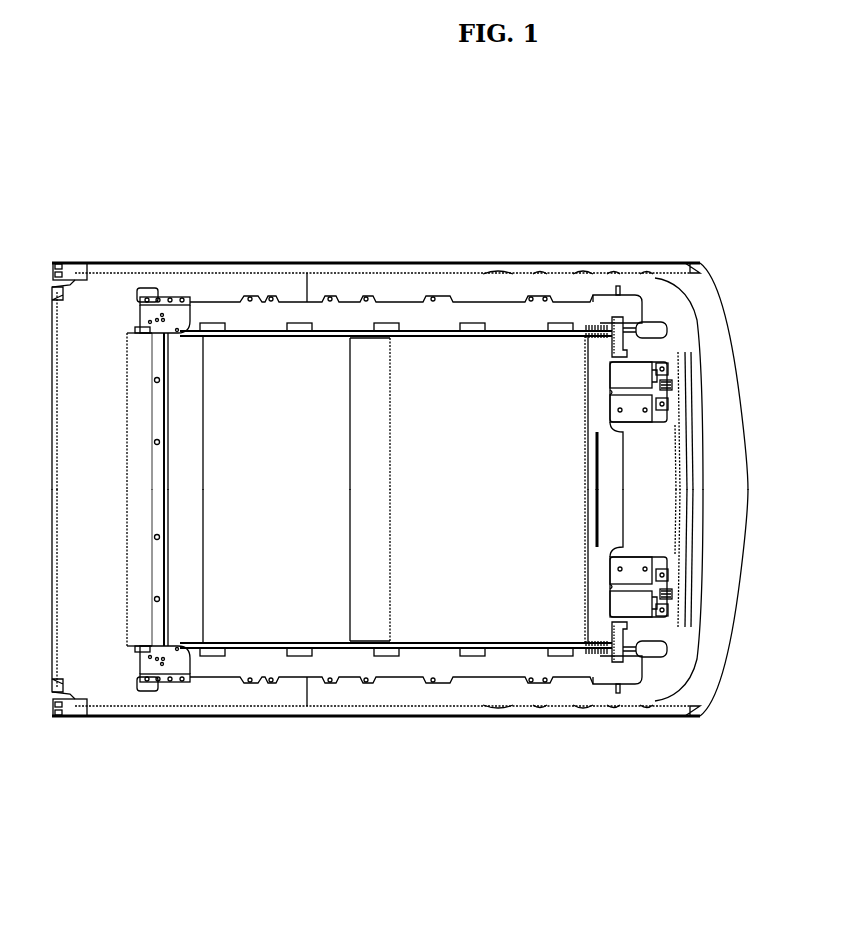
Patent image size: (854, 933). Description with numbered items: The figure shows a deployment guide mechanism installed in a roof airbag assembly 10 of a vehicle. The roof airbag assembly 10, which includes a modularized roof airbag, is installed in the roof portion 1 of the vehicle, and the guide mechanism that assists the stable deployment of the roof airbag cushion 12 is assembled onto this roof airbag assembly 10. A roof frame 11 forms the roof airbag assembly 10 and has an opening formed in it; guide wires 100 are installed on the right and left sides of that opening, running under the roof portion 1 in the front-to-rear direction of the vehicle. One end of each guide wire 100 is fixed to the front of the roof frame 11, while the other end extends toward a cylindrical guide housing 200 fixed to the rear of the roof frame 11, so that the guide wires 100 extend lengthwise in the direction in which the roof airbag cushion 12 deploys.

The roof portion 1 is at (381, 212).
The roof airbag assembly 10 is at (117, 245).
The roof frame 11 is at (222, 292).
The roof airbag cushion 12 is at (598, 352).
The guide wire 100 is at (520, 340).
The guide housing 200 is at (652, 327).